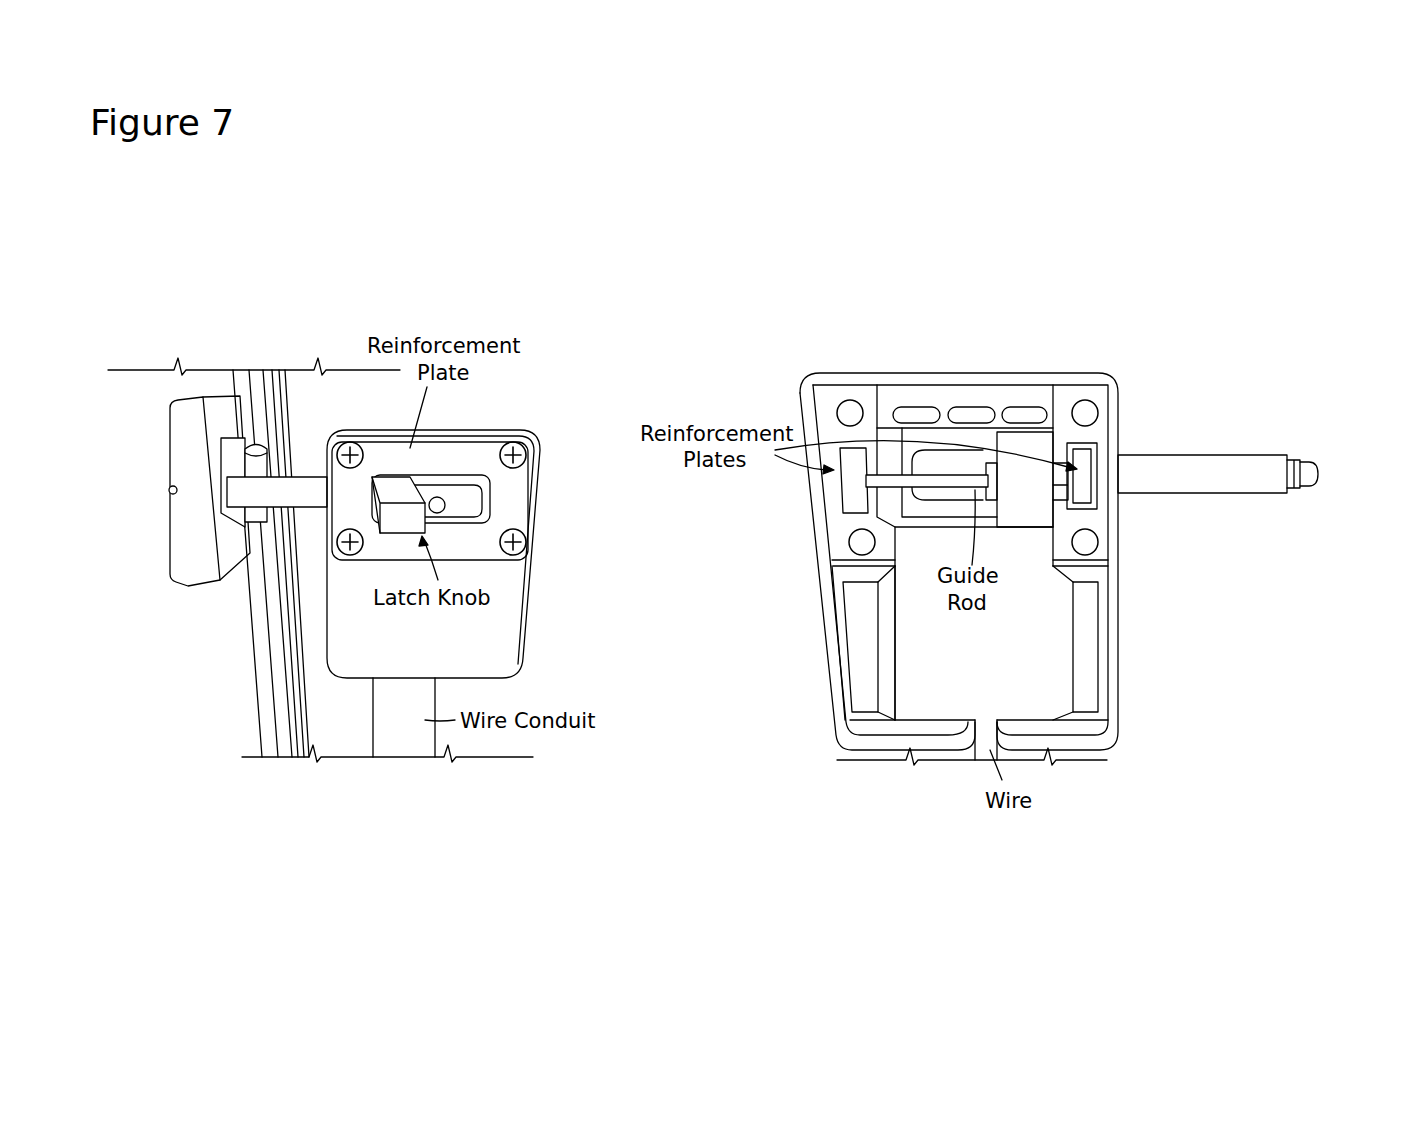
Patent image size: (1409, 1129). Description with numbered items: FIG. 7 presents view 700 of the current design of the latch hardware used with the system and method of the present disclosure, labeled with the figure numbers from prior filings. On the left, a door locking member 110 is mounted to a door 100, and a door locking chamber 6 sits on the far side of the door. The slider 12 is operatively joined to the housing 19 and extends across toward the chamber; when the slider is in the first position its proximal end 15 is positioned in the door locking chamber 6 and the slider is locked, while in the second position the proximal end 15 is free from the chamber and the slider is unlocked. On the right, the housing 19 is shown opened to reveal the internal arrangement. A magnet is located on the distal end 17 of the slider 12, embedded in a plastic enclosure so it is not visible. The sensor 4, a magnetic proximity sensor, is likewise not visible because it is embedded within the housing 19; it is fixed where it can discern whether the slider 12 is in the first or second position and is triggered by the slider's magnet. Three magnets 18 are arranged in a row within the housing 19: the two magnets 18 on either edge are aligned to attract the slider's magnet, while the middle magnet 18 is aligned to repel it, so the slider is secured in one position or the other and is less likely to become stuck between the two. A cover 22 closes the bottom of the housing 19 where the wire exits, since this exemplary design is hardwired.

The view 700 is at (79, 228).
The door locking member 110 is at (240, 353).
The door 100 is at (558, 634).
The door locking chamber 6 is at (197, 586).
The slider 12 is at (304, 465).
The proximal end 15 is at (1333, 497).
The distal end 17 is at (437, 498).
The housing 19 is at (372, 668).
The magnet 18 is at (1095, 328).
The sensor 4 is at (1043, 665).
The cover 22 is at (950, 705).